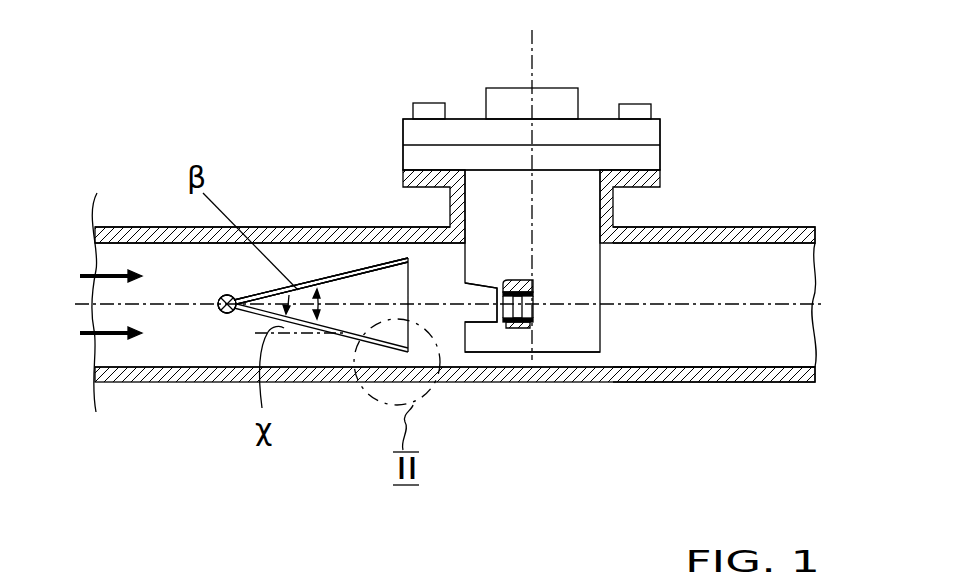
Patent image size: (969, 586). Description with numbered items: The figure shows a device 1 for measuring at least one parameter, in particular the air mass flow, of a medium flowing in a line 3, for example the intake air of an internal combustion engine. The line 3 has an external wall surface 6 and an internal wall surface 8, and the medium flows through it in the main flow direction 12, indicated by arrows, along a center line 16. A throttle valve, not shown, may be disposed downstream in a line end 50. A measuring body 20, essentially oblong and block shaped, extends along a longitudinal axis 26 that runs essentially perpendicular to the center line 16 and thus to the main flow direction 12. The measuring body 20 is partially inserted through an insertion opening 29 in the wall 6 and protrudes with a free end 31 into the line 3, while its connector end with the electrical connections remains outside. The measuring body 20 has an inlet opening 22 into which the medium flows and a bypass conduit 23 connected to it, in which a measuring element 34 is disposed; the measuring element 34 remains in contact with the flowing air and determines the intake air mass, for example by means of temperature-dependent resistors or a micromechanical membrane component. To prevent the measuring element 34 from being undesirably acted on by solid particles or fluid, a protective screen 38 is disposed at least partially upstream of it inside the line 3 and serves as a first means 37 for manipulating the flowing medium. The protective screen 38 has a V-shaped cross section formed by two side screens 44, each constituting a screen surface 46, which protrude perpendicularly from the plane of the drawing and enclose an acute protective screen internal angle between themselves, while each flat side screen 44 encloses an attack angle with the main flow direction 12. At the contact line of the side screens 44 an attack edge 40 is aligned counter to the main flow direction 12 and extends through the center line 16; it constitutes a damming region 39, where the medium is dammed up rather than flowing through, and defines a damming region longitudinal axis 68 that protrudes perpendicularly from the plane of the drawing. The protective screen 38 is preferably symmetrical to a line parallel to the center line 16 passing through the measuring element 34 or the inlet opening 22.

The device 1 is at (367, 133).
The line 3 is at (167, 257).
The external wall surface 6 is at (121, 383).
The internal wall surface 8 is at (184, 363).
The main flow direction 12 is at (111, 287).
The center line 16 is at (728, 304).
The measuring body 20 is at (583, 323).
The inlet opening 22 is at (478, 317).
The bypass conduit 23 is at (532, 312).
The longitudinal axis 26 is at (533, 58).
The insertion opening 29 is at (466, 203).
The free end 31 is at (577, 352).
The measuring element 34 is at (513, 325).
The first means for manipulating the flowing medium 37 is at (330, 272).
The protective screen 38 is at (321, 281).
The damming region 39 is at (226, 314).
The attack edge 40 is at (227, 304).
The side screen 44 is at (350, 326).
The screen surface 46 is at (363, 267).
The line end 50 is at (782, 348).
The damming region longitudinal axis 68 is at (227, 304).